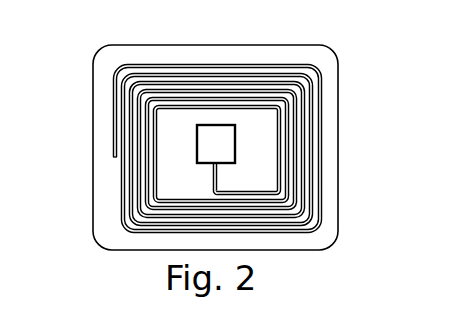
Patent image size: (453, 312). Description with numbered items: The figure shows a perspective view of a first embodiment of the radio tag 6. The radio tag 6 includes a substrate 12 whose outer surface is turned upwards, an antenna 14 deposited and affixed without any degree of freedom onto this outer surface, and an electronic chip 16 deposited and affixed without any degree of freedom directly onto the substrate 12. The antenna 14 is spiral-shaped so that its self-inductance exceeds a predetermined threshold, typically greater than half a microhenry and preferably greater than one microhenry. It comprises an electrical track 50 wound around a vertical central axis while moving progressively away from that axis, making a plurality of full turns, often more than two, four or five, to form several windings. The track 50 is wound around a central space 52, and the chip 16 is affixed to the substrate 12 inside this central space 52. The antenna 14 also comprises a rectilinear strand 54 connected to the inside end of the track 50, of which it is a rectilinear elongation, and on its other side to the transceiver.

The radio tag 6 is at (243, 125).
The substrate 12 is at (327, 108).
The antenna 14 is at (117, 156).
The electronic chip 16 is at (235, 144).
The electrical track 50 is at (123, 172).
The central space 52 is at (170, 122).
The rectilinear strand 54 is at (215, 191).